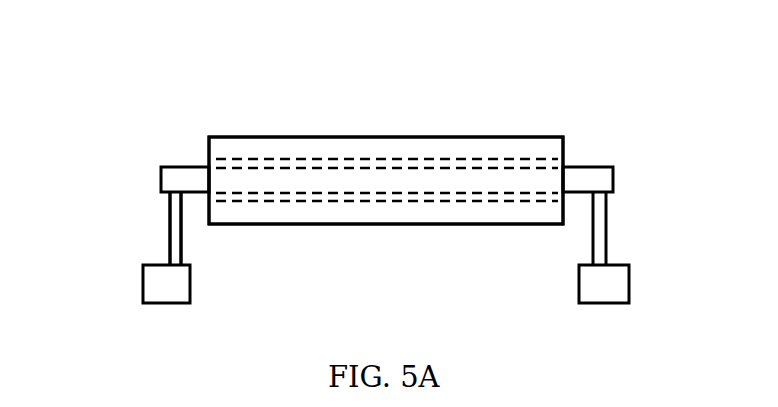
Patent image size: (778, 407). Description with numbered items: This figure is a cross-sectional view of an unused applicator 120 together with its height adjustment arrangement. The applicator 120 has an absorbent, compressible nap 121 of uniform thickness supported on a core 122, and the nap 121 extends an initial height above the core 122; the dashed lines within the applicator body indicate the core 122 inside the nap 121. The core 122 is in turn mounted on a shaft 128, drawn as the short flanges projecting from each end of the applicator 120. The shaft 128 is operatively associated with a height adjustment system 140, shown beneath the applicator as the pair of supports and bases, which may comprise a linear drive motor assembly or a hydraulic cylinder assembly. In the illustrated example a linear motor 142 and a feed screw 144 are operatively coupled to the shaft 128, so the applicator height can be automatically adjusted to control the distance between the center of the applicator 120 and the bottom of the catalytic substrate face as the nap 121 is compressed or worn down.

The applicator 120 is at (372, 113).
The nap 121 is at (547, 147).
The core 122 is at (353, 195).
The shaft 128 is at (607, 179).
The height adjustment system 140 is at (123, 302).
The linear motor 142 is at (162, 279).
The feed screw 144 is at (176, 213).